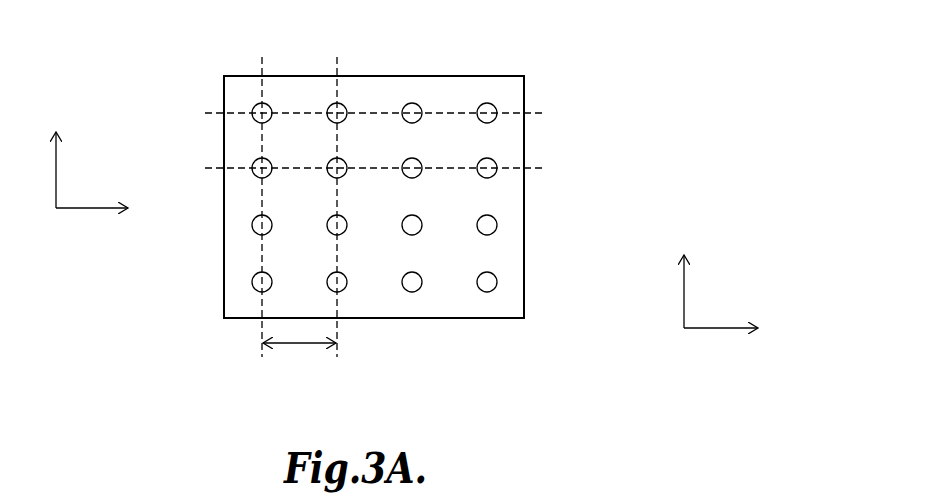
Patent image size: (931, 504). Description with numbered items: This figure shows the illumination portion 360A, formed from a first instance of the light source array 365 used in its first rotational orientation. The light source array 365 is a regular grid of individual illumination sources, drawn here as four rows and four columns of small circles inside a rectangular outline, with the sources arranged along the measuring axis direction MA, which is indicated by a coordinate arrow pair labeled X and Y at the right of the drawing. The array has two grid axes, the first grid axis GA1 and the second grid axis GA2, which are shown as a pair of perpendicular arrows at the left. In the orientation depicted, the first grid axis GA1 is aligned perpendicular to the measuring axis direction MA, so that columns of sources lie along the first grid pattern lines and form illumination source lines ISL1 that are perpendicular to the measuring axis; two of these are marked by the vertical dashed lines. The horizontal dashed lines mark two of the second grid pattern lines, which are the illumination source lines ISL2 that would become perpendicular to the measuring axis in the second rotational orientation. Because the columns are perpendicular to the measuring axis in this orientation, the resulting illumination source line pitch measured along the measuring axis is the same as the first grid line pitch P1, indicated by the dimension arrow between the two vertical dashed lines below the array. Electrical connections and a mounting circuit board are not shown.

The light source array 365 is at (392, 58).
The illumination portion 360A is at (487, 76).
The illumination source lines ISL1 is at (337, 70).
The illumination source lines ISL2 is at (537, 168).
The first grid line pitch P1 is at (290, 345).
The first grid axis GA1 is at (56, 154).
The second grid axis GA2 is at (124, 207).
The Y direction Y is at (685, 275).
The X direction / main axis MA X is at (761, 330).